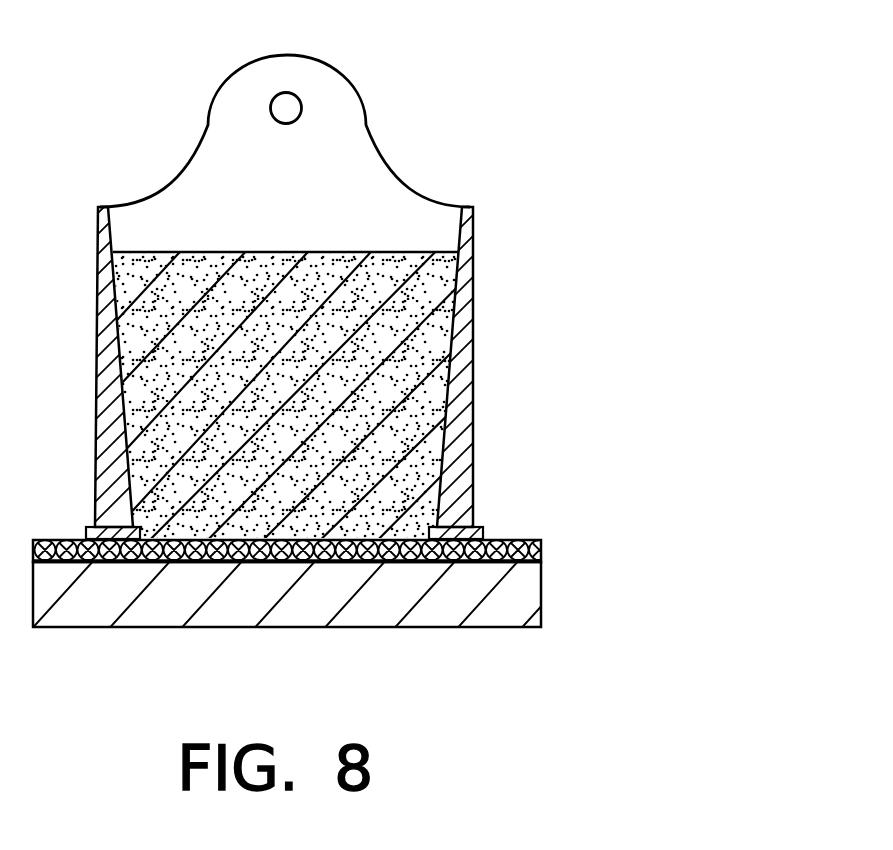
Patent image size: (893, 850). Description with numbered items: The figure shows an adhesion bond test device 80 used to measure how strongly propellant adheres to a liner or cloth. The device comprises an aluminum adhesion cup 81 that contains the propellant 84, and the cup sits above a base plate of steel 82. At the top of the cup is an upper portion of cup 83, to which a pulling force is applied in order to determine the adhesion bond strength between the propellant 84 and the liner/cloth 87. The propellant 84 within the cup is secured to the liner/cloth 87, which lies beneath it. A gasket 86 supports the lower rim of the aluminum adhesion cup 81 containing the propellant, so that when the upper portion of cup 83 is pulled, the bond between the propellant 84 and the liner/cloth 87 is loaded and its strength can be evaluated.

The adhesion bond test device 80 is at (440, 98).
The aluminum adhesion cup 81 is at (473, 352).
The base plate of steel 82 is at (530, 598).
The upper portion of cup 83 is at (223, 113).
The propellant 84 is at (423, 287).
The gasket 86 is at (480, 532).
The liner/cloth 87 is at (525, 541).